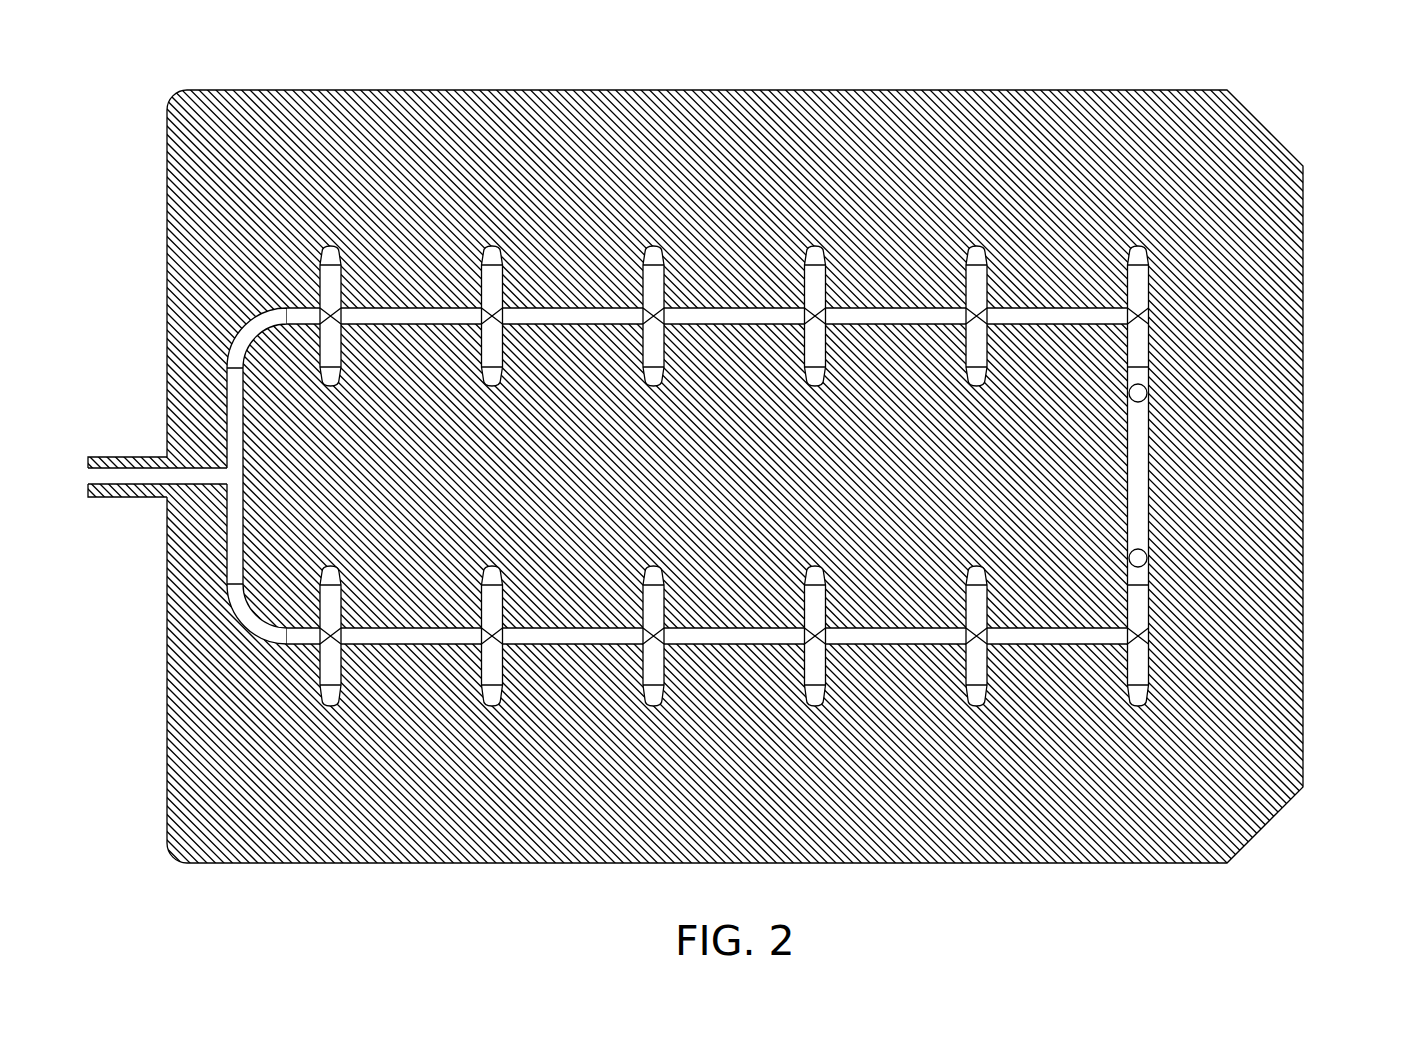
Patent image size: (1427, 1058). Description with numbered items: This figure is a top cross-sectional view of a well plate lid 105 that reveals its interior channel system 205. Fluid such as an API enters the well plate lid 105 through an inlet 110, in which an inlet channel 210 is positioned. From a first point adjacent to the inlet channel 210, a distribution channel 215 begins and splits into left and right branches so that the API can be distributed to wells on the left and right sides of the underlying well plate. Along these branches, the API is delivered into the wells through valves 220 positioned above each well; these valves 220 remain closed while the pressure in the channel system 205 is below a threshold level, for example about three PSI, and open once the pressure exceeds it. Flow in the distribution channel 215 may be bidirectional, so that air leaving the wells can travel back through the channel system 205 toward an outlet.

The well plate lid 105 is at (1293, 106).
The inlet 110 is at (110, 435).
The channel system 205 is at (1165, 528).
The inlet channel 210 is at (138, 478).
The distribution channel 215 is at (219, 597).
The valve 220 is at (335, 705).